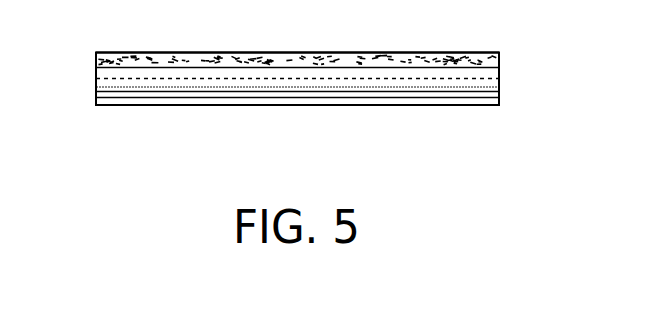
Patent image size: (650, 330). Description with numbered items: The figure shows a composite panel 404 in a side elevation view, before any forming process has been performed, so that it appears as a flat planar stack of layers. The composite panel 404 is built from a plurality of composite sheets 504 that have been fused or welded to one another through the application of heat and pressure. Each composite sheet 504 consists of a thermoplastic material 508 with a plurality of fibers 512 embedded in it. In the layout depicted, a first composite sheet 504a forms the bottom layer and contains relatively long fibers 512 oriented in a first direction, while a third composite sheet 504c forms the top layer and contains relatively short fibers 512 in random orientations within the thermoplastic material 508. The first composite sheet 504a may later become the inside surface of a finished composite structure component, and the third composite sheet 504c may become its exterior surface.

The composite panel 404 is at (118, 52).
The composite sheet 504 is at (96, 104).
The first composite sheet 504a is at (148, 98).
The third composite sheet 504c is at (335, 63).
The thermoplastic material 508 is at (177, 55).
The fibers 512 is at (412, 62).